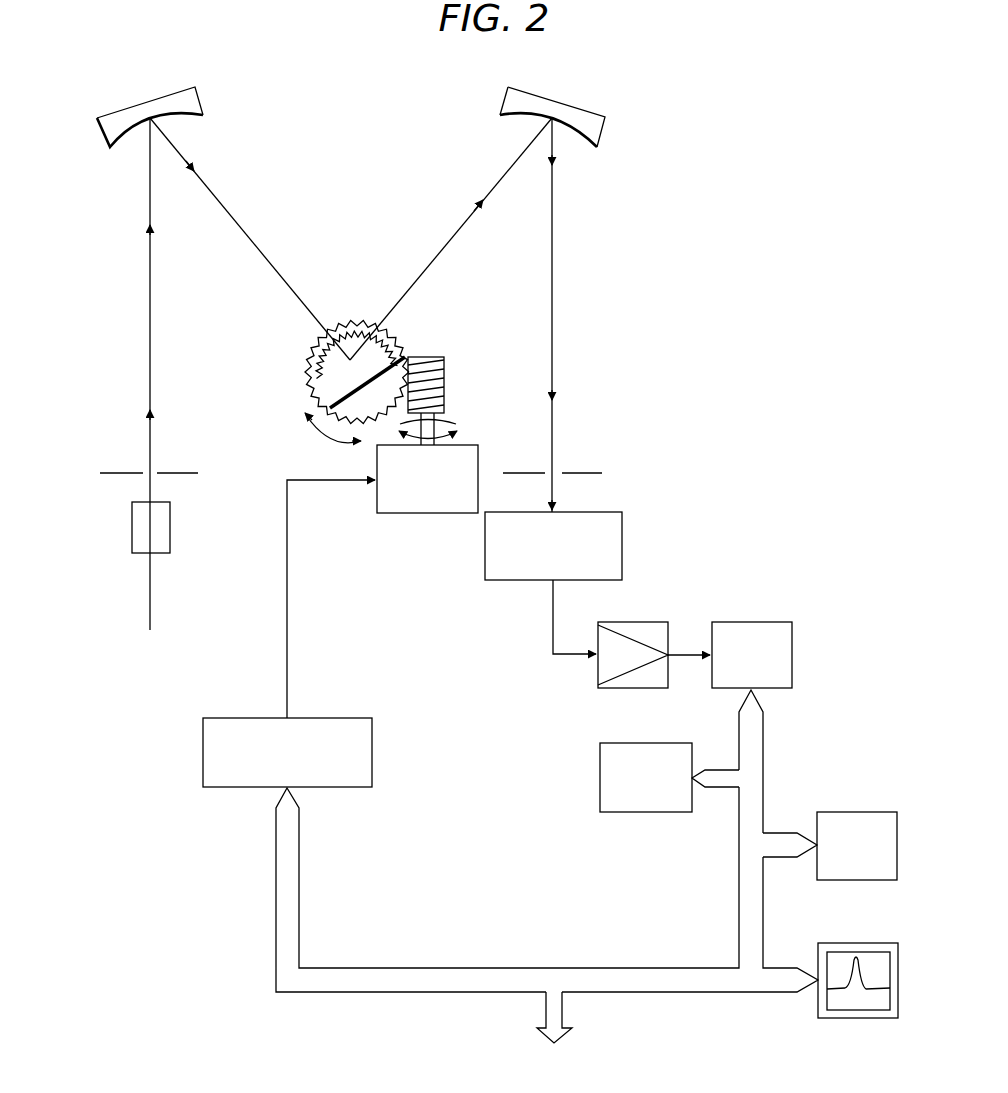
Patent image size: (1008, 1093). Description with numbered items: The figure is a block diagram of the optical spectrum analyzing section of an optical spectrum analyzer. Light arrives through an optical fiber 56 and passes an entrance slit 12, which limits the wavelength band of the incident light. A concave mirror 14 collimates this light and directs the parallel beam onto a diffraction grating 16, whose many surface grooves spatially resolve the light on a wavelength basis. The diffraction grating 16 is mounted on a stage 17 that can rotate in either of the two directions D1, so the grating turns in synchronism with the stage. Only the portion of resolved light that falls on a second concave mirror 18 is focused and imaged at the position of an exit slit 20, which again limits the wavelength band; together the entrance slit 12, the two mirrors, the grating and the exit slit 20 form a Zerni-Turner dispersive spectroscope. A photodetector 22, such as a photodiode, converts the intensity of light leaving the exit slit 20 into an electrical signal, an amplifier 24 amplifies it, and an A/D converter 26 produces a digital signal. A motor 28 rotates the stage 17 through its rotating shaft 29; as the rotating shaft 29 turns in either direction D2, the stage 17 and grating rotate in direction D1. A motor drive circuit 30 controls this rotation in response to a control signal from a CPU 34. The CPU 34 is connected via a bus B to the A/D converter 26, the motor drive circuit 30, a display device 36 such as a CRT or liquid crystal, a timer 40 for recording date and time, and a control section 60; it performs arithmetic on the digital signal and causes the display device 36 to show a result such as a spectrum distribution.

The entrance slit 12 is at (123, 473).
The concave mirror 14 is at (196, 96).
The diffraction grating 16 is at (318, 396).
The stage 17 is at (311, 352).
The concave mirror 18 is at (558, 101).
The exit slit 20 is at (578, 473).
The photodetector 22 is at (624, 545).
The amplifier 24 is at (632, 622).
The A/D converter 26 is at (750, 622).
The motor 28 is at (427, 513).
The rotating shaft 29 is at (450, 415).
The motor drive circuit 30 is at (203, 752).
The CPU 34 is at (857, 812).
The display device 36 is at (859, 943).
The timer 40 is at (645, 743).
The optical fiber 56 is at (150, 593).
The control section 60 is at (552, 1034).
The bus B is at (740, 912).
The rotation directions of the stage D1 is at (333, 441).
The rotation directions of the rotating shaft D2 is at (440, 426).